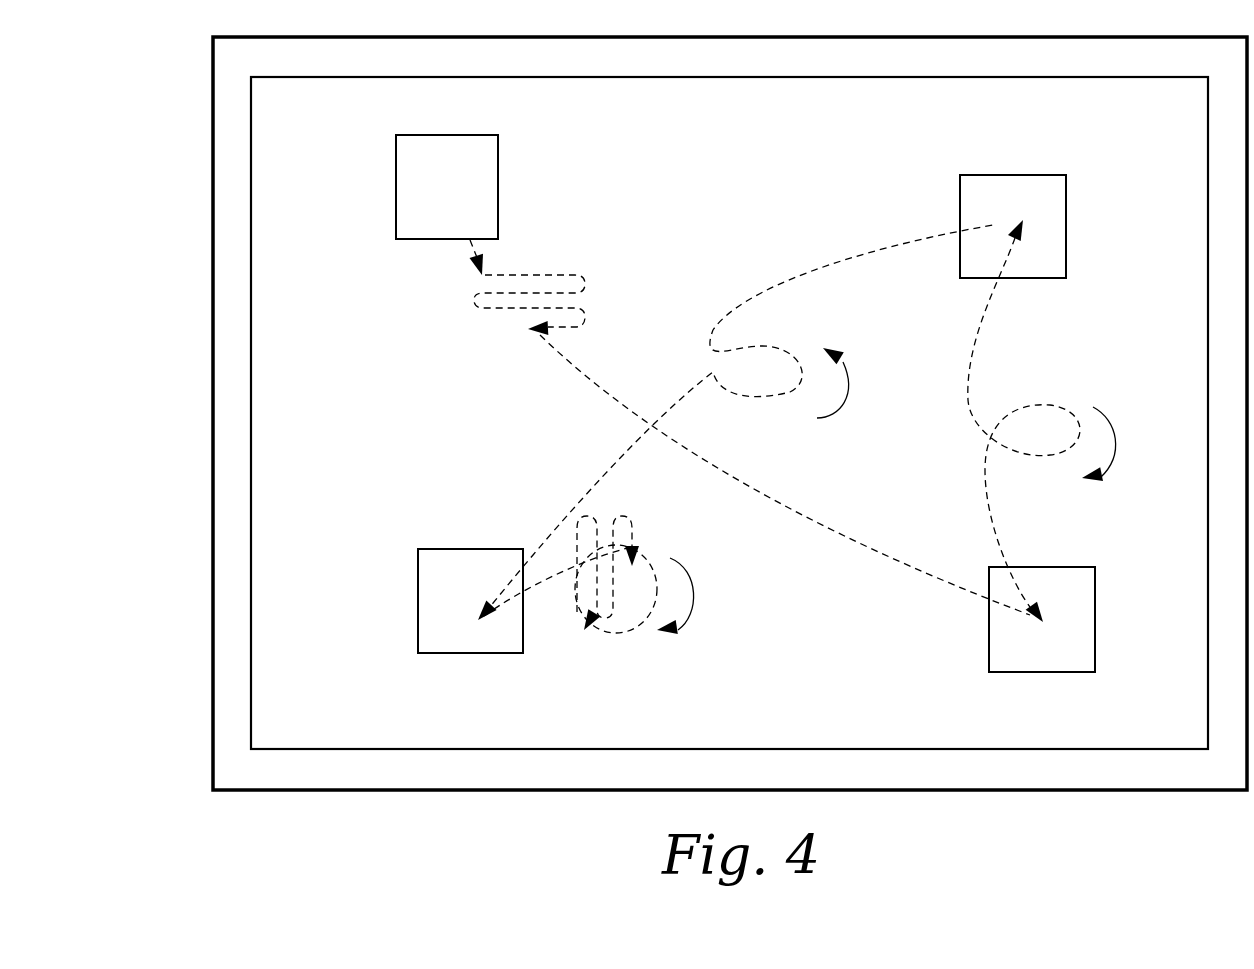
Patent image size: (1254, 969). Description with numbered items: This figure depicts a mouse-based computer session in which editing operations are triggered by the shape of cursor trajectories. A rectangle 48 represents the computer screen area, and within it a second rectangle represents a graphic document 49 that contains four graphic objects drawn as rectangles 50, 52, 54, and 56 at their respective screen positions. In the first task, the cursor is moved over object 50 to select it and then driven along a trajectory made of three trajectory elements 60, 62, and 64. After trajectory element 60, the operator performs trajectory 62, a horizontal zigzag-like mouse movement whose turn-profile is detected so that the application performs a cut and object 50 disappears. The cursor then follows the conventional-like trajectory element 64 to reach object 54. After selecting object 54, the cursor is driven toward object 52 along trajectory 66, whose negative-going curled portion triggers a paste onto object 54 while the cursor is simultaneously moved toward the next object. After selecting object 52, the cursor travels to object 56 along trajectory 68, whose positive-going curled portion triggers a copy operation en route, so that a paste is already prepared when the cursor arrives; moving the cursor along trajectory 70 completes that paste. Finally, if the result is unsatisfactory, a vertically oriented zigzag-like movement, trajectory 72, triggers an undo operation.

The rectangle representing computer screen area 48 is at (213, 660).
The graphic document 49 is at (342, 750).
The graphic object 50 is at (396, 165).
The graphic object 52 is at (960, 203).
The graphic object 54 is at (989, 630).
The graphic object 56 is at (418, 605).
The trajectory element 60 is at (470, 245).
The trajectory 62 is at (478, 300).
The trajectory element 64 is at (785, 522).
The trajectory 66 is at (985, 312).
The trajectory 68 is at (813, 280).
The trajectory 70 is at (633, 632).
The trajectory 72 is at (587, 517).